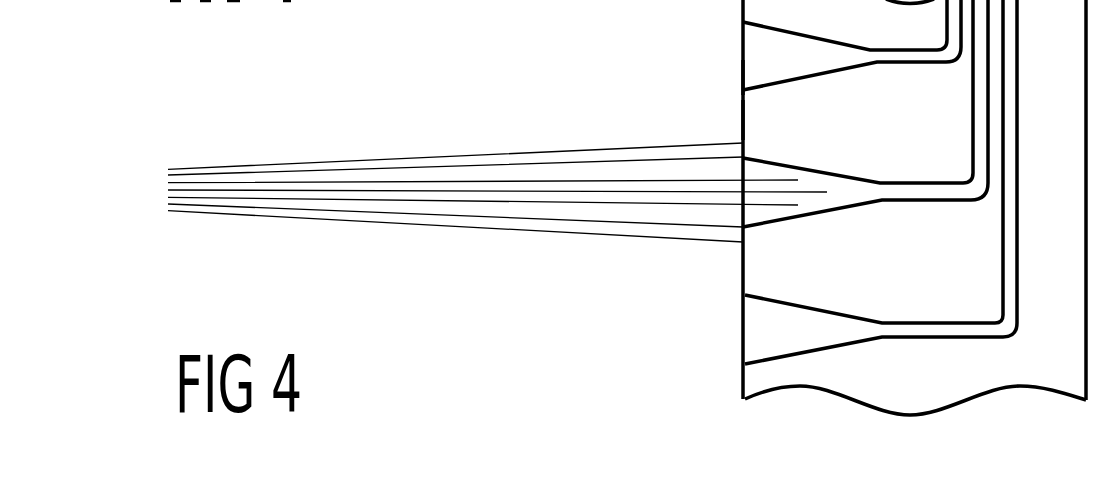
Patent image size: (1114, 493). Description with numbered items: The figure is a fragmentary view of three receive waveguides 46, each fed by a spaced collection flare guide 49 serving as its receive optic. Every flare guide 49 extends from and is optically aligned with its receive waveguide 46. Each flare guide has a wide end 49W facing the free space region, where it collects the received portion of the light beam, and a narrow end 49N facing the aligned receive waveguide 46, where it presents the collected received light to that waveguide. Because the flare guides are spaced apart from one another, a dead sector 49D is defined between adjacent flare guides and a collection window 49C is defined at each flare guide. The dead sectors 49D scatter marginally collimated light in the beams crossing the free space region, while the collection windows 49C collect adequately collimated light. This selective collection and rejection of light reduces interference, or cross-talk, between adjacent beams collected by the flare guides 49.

The receive waveguide 46 is at (893, 52).
The collection flare guide 49 is at (780, 57).
The collection window 49C is at (738, 77).
The dead sector 49D is at (740, 120).
The wide end 49W is at (750, 303).
The narrow end 49N is at (857, 327).